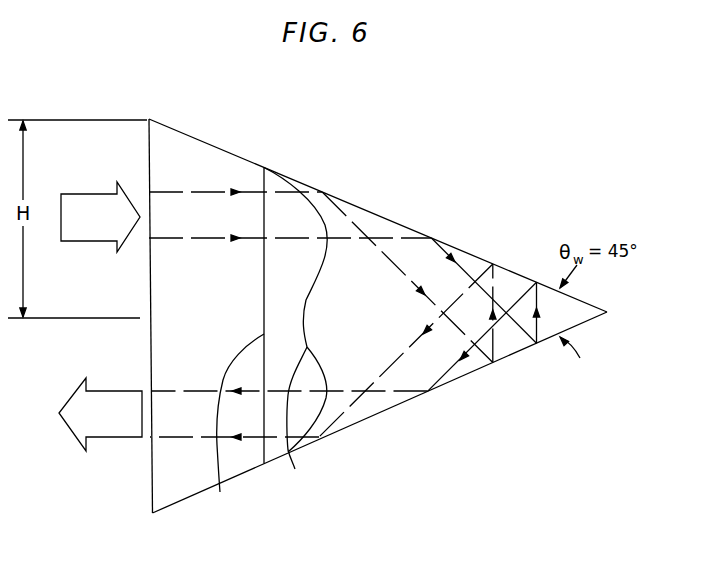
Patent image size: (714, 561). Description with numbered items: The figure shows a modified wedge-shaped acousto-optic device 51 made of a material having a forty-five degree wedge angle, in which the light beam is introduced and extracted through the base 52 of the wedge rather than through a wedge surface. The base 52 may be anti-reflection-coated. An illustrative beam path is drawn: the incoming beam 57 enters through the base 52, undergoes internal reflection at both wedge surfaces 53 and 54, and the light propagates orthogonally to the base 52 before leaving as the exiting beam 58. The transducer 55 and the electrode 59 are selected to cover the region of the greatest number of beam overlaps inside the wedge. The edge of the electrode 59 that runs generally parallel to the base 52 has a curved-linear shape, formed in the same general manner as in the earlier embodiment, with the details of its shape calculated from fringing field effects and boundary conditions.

The wedge-shaped acousto-optic device 51 is at (317, 117).
The base 52 is at (147, 147).
The wedge surface 53 is at (240, 157).
The wedge surface 54 is at (383, 411).
The transducer 55 is at (234, 428).
The incoming light beam 57 is at (90, 236).
The outgoing (returned) light beam 58 is at (112, 434).
The electrode 59 is at (295, 334).